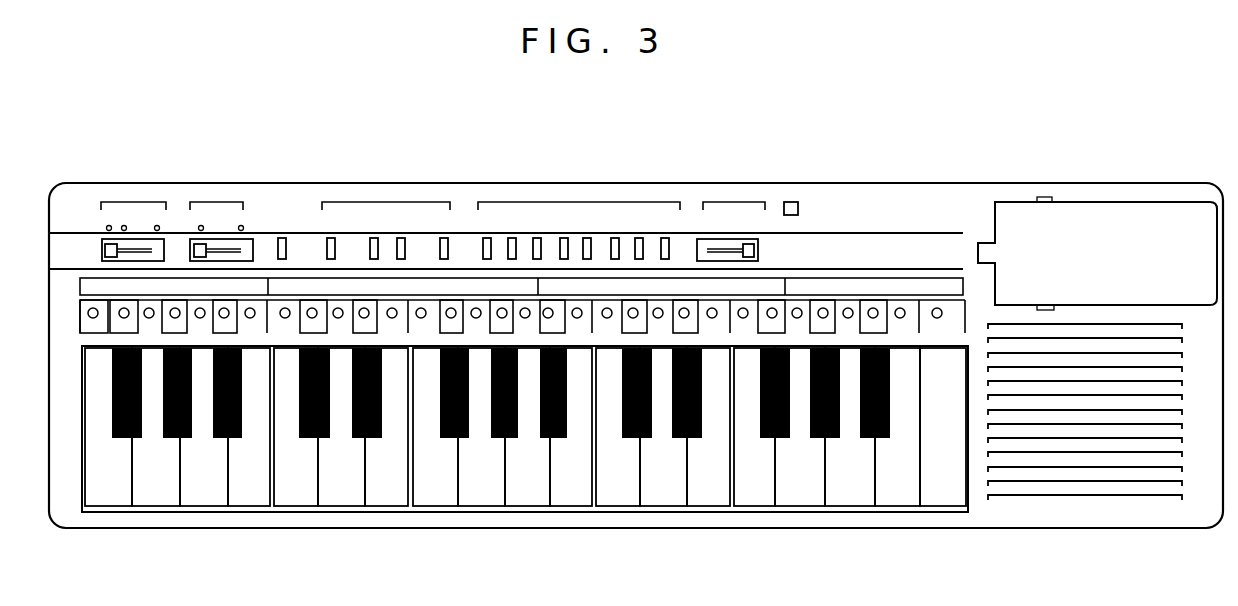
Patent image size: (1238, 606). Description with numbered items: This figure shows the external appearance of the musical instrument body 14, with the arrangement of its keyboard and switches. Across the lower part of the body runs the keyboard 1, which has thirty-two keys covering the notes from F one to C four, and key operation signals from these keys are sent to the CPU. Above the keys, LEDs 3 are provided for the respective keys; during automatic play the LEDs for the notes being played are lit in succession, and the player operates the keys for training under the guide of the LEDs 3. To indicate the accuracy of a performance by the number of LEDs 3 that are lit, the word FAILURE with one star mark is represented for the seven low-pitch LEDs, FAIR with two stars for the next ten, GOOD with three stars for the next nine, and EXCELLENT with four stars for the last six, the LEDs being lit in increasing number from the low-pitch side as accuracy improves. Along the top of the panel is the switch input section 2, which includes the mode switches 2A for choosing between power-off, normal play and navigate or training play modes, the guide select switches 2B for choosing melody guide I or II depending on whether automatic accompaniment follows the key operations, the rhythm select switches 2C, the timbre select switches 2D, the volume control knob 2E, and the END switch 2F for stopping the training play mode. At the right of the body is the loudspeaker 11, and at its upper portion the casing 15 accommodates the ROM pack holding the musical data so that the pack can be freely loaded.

The keyboard 1 is at (665, 493).
The switch input section 2 is at (866, 233).
The mode switches 2A is at (140, 202).
The guide select switches 2B is at (215, 202).
The rhythm select switches 2C is at (372, 202).
The timbre select switches 2D is at (563, 202).
The volume control knob 2E is at (727, 202).
The END switch 2F is at (795, 202).
The LEDs 3 is at (118, 313).
The loudspeaker 11 is at (1092, 475).
The musical instrument body 14 is at (465, 181).
The casing 15 is at (1152, 202).